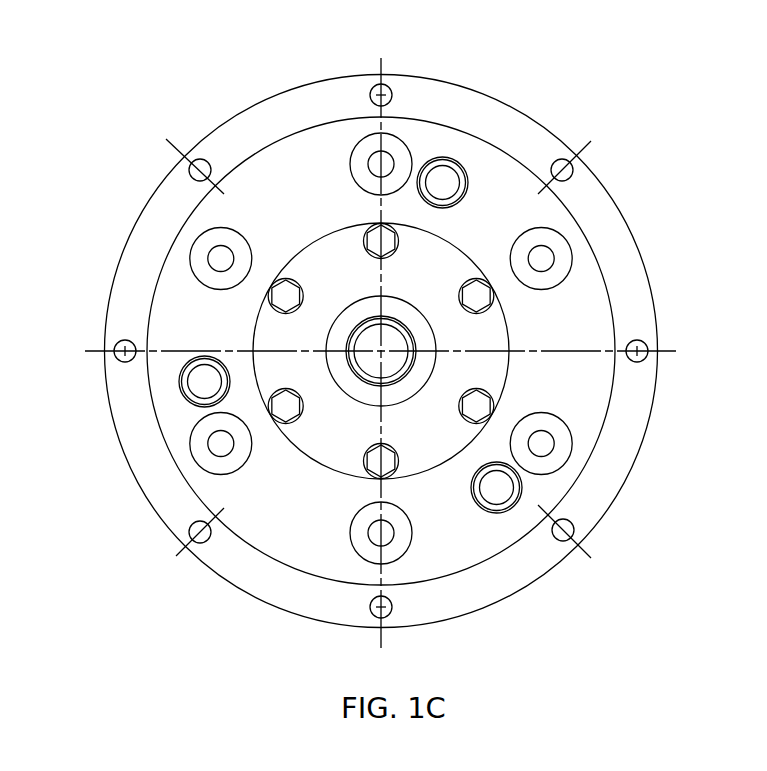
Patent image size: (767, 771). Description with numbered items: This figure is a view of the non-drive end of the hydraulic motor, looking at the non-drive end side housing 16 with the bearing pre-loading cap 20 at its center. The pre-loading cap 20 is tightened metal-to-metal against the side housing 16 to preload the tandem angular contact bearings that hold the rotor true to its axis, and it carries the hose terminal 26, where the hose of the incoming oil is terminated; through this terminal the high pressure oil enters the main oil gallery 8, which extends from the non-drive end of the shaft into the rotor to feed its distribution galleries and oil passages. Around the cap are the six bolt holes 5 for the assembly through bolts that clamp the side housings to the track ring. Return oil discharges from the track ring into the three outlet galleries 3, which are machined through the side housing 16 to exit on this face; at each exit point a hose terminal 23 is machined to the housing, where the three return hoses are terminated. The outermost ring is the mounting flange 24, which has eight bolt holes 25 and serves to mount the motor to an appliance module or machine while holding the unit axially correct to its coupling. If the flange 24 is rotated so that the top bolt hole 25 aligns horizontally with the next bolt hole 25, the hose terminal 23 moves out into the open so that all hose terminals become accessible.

The outlet gallery 3 is at (443, 176).
The bolt hole 5 is at (388, 158).
The main oil gallery 8 is at (365, 344).
The non-drive end side housing 16 is at (295, 183).
The pre-loading cap 20 is at (420, 340).
The hose terminal 23 is at (467, 168).
The flange 24 is at (347, 103).
The bolt hole 25 is at (373, 90).
The hose terminal 26 is at (412, 352).